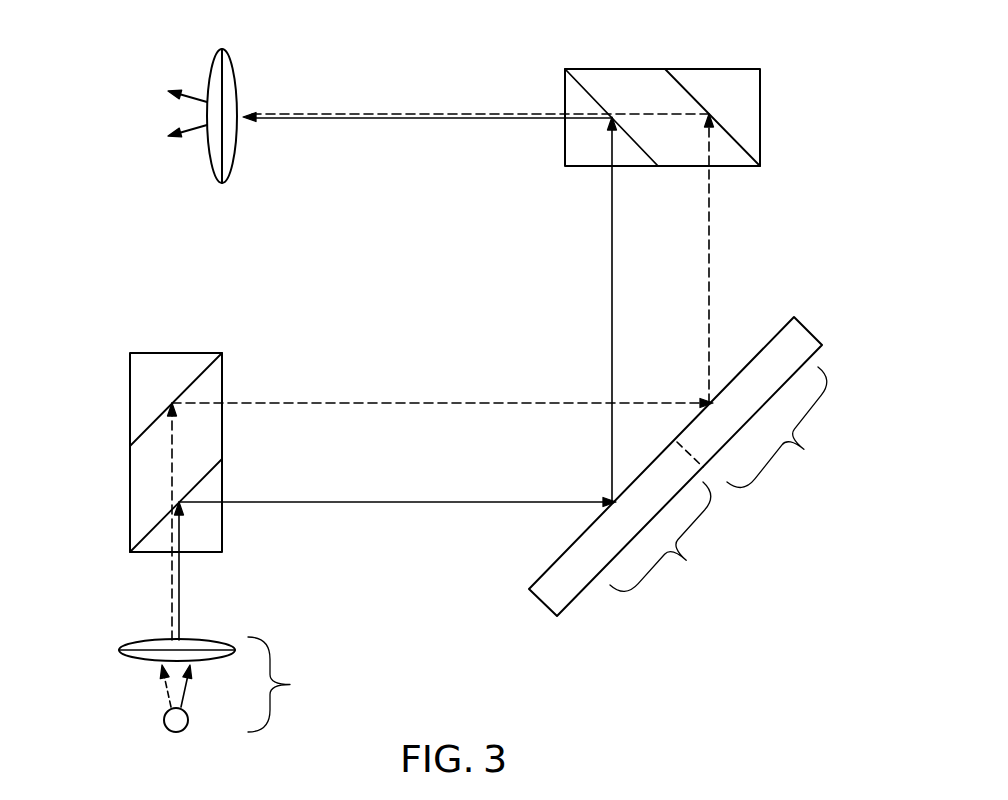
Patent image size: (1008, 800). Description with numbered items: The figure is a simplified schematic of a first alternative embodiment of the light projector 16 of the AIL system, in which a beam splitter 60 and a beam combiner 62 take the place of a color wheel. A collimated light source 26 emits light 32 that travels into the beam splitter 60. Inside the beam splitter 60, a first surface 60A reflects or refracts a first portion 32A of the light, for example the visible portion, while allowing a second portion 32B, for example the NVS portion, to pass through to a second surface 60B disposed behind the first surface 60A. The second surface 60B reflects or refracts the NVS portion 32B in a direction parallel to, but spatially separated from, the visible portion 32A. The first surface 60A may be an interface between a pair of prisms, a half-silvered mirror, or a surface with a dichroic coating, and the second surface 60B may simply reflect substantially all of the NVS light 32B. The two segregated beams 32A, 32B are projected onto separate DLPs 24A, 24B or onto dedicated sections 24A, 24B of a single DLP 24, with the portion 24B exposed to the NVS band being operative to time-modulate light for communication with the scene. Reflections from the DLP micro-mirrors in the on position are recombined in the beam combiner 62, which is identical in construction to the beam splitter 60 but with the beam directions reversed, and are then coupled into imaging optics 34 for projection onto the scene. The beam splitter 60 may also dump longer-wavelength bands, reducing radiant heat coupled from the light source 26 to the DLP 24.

The light projector 16 is at (148, 246).
The DLP 24 is at (540, 604).
The first DLP section 24A is at (675, 540).
The second DLP section 24B is at (791, 427).
The collimated light source 26 is at (221, 684).
The light 32 is at (405, 116).
The first portion of light 32A is at (412, 501).
The second portion of light 32B is at (413, 402).
The imaging optics 34 is at (230, 58).
The beam splitter 60 is at (224, 370).
The first surface 60A is at (592, 88).
The second surface 60B is at (742, 143).
The beam combiner 62 is at (762, 85).